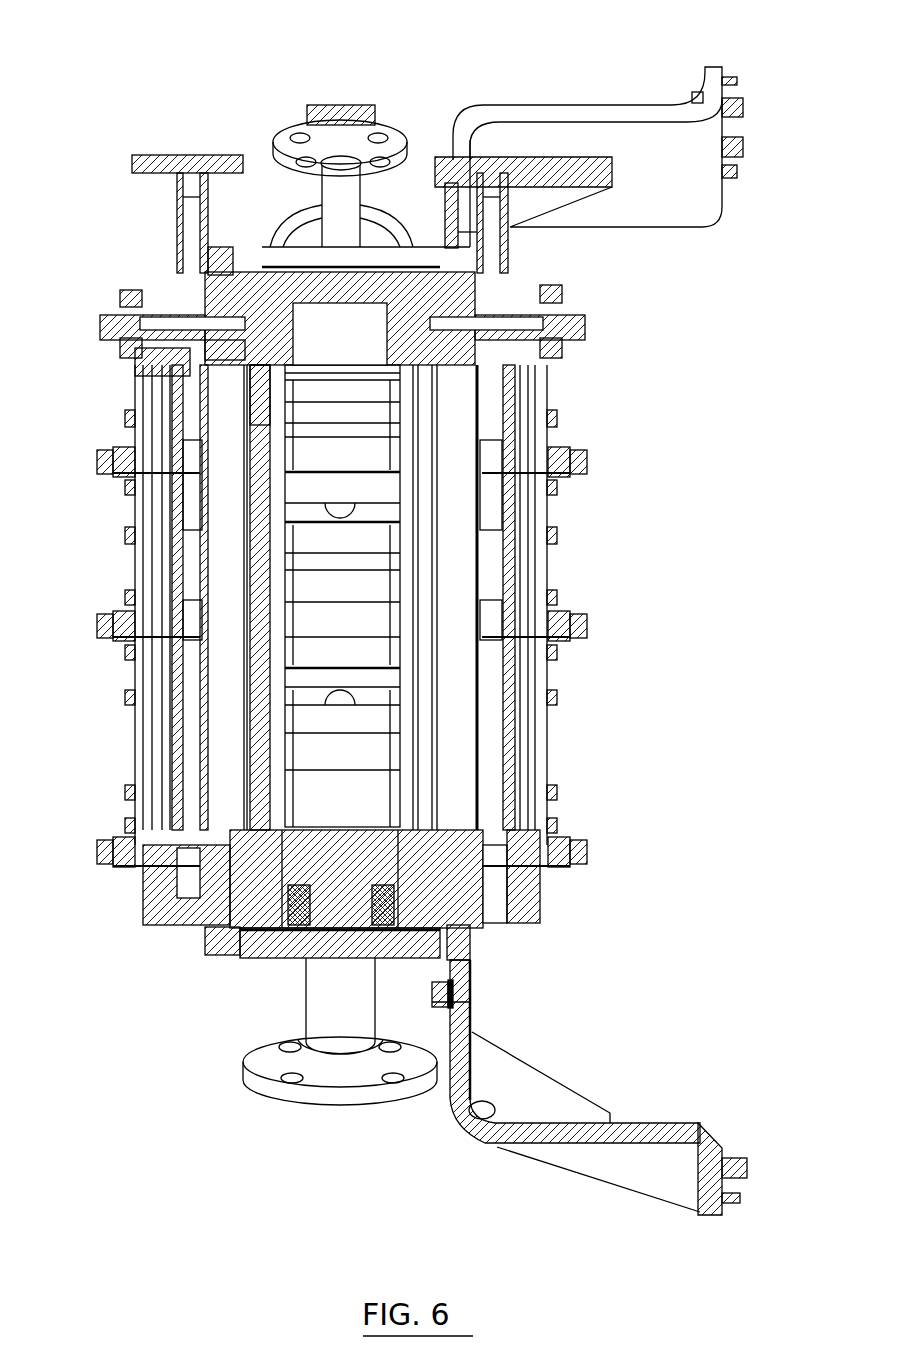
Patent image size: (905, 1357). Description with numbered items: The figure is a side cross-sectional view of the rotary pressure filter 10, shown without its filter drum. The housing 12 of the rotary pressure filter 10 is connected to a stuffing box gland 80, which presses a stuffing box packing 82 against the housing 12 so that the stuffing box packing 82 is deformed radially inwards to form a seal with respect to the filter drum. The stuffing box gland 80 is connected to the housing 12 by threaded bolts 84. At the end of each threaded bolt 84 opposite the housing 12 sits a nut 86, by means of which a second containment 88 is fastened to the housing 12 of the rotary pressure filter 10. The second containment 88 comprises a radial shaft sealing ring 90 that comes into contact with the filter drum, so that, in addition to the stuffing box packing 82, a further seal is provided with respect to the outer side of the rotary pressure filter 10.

The rotary pressure filter 10 is at (116, 66).
The housing 12 is at (403, 292).
The stuffing box gland 80 is at (214, 357).
The stuffing box packing 82 is at (259, 366).
The threaded bolts 84 is at (228, 330).
The nut 86 is at (123, 323).
The second containment 88 is at (110, 543).
The radial shaft sealing ring 90 is at (152, 367).